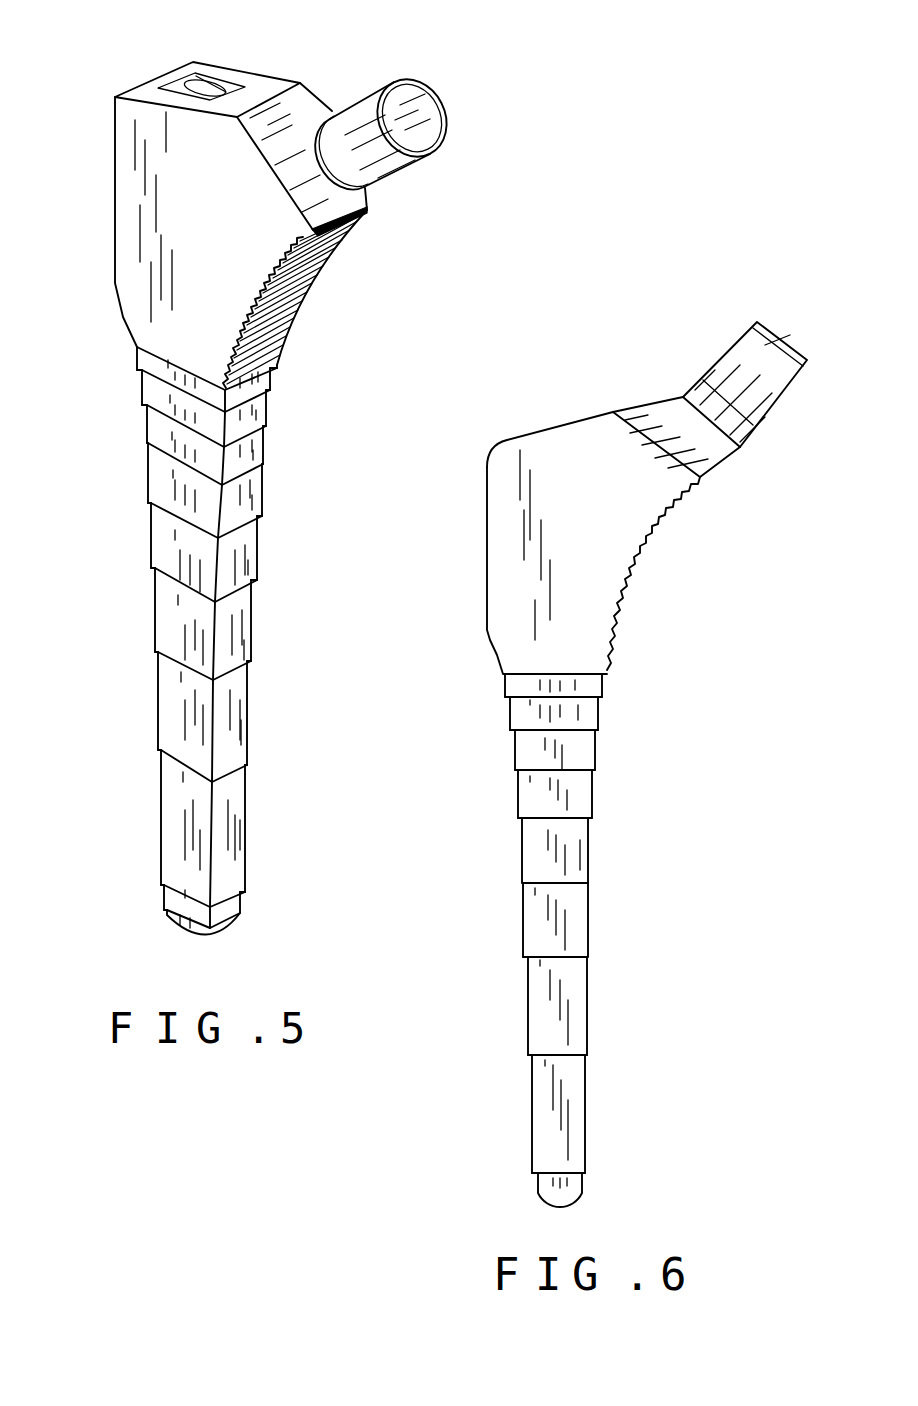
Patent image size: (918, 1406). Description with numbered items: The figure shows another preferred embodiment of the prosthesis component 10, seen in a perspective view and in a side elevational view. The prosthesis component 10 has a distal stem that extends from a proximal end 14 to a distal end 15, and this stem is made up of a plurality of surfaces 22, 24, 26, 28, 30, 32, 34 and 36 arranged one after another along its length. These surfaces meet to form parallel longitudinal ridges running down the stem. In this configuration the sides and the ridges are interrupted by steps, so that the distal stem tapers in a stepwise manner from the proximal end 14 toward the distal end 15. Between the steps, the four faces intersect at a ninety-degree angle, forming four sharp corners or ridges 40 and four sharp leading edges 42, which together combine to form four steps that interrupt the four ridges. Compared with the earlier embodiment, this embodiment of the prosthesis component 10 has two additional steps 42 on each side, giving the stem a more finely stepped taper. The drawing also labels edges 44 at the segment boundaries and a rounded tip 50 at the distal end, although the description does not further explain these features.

In FIG. 5, the prosthesis component 10 is at (317, 76).
In FIG. 6, the prosthesis component 10 is at (605, 390).
In FIG. 5, the proximal end 14 is at (131, 349).
In FIG. 5, the distal end 15 is at (253, 905).
In FIG. 5, the surface 22 is at (153, 363).
In FIG. 6, the surface 22 is at (585, 687).
In FIG. 5, the surface 24 is at (175, 410).
In FIG. 6, the surface 24 is at (595, 712).
In FIG. 5, the surface 26 is at (177, 463).
In FIG. 6, the surface 26 is at (565, 760).
In FIG. 5, the surface 28 is at (155, 517).
In FIG. 6, the surface 28 is at (568, 795).
In FIG. 5, the surface 30 is at (177, 550).
In FIG. 6, the surface 30 is at (533, 848).
In FIG. 5, the surface 32 is at (157, 639).
In FIG. 6, the surface 32 is at (565, 938).
In FIG. 5, the surface 34 is at (165, 712).
In FIG. 6, the surface 34 is at (565, 1010).
In FIG. 5, the surface 36 is at (180, 826).
In FIG. 6, the surface 36 is at (548, 1110).
In FIG. 5, the sharp corners or ridges 40 is at (268, 448).
In FIG. 6, the sharp corners or ridges 40 is at (600, 690).
In FIG. 5, the sharp leading edges 42 is at (175, 427).
In FIG. 6, the sharp leading edges 42 is at (527, 706).
In FIG. 5, the edge of segment 44 is at (140, 400).
In FIG. 6, the edge of segment 44 is at (505, 700).
In FIG. 5, the rounded distal tip 50 is at (217, 953).
In FIG. 6, the rounded distal tip 50 is at (565, 1203).